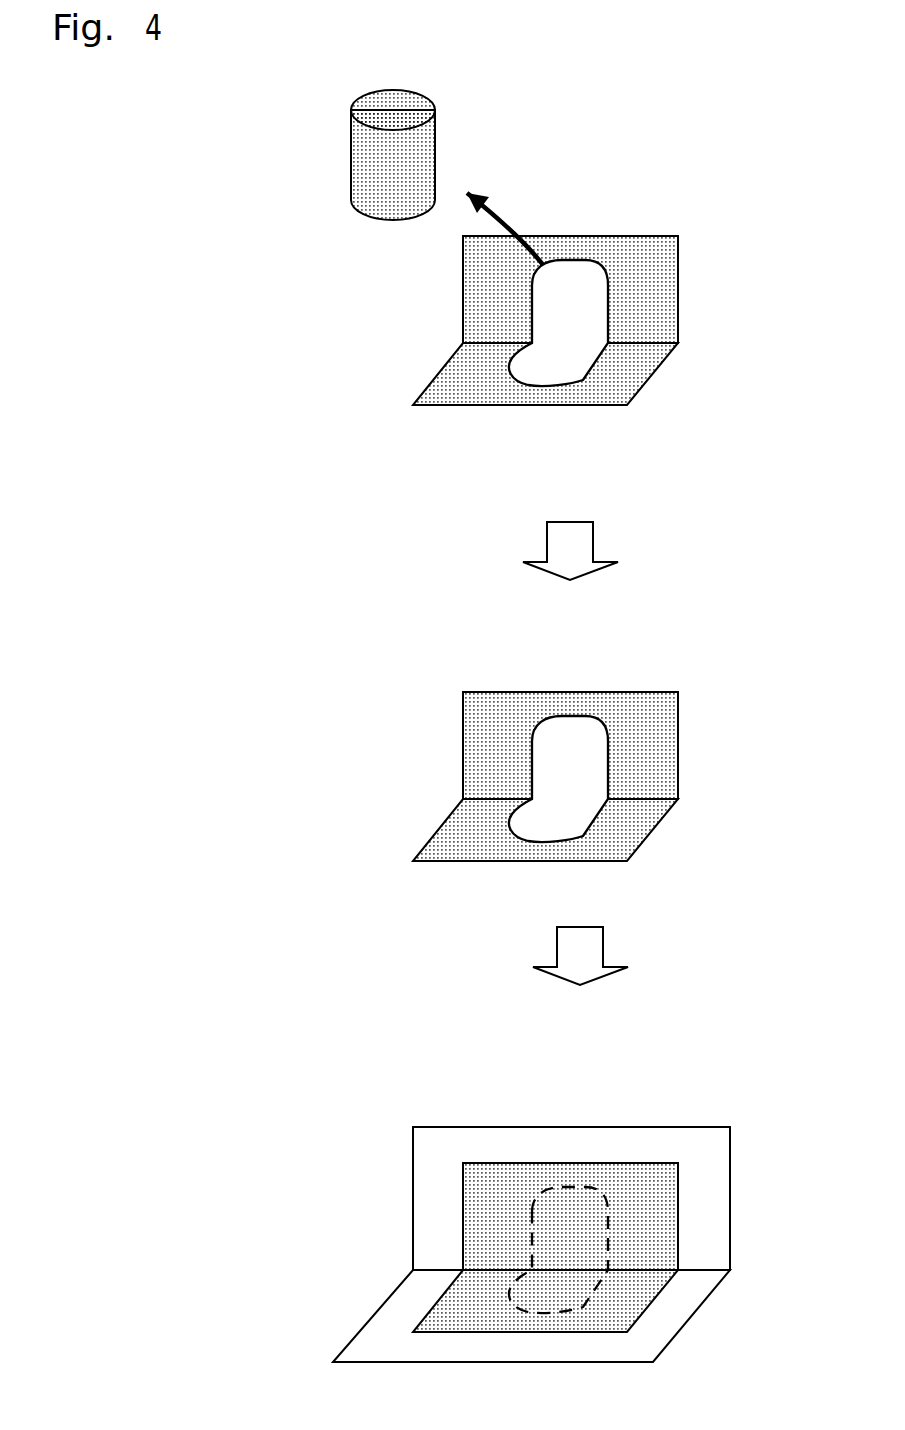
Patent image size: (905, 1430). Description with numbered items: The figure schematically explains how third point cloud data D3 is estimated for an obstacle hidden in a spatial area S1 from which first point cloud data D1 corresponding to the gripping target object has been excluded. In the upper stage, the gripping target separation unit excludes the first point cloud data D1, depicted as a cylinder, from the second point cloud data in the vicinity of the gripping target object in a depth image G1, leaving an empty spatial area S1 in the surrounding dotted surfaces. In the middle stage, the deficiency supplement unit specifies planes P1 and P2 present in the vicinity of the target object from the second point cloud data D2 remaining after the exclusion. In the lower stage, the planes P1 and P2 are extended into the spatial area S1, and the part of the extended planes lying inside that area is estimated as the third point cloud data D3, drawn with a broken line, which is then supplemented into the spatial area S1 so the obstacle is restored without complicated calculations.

The depth image G1 is at (534, 744).
The first point cloud data D1 is at (388, 168).
The second point cloud data D2 is at (488, 312).
The third point cloud data D3 is at (558, 1238).
The spatial area S1 is at (573, 360).
The plane P1 is at (693, 743).
The plane P2 is at (665, 837).